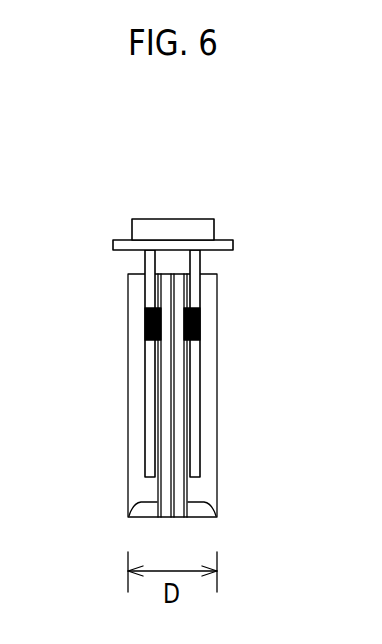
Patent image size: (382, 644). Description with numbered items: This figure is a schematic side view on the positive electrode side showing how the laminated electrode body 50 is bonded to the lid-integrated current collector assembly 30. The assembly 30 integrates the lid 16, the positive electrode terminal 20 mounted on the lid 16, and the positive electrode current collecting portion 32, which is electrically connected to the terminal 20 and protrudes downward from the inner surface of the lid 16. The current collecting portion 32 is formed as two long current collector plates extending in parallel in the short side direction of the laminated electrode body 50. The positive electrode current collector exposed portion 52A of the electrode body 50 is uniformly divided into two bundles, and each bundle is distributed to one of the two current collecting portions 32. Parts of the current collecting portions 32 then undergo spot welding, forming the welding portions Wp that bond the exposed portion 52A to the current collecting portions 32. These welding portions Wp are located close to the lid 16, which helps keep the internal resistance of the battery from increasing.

The lid-integrated current collector assembly 30 is at (147, 185).
The positive electrode terminal 20 is at (200, 218).
The lid 16 is at (228, 239).
The welding portion Wp is at (145, 321).
The positive electrode current collecting portion 32 is at (158, 376).
The laminated electrode body 50 is at (218, 443).
The positive electrode current collector exposed portion 52A is at (127, 515).